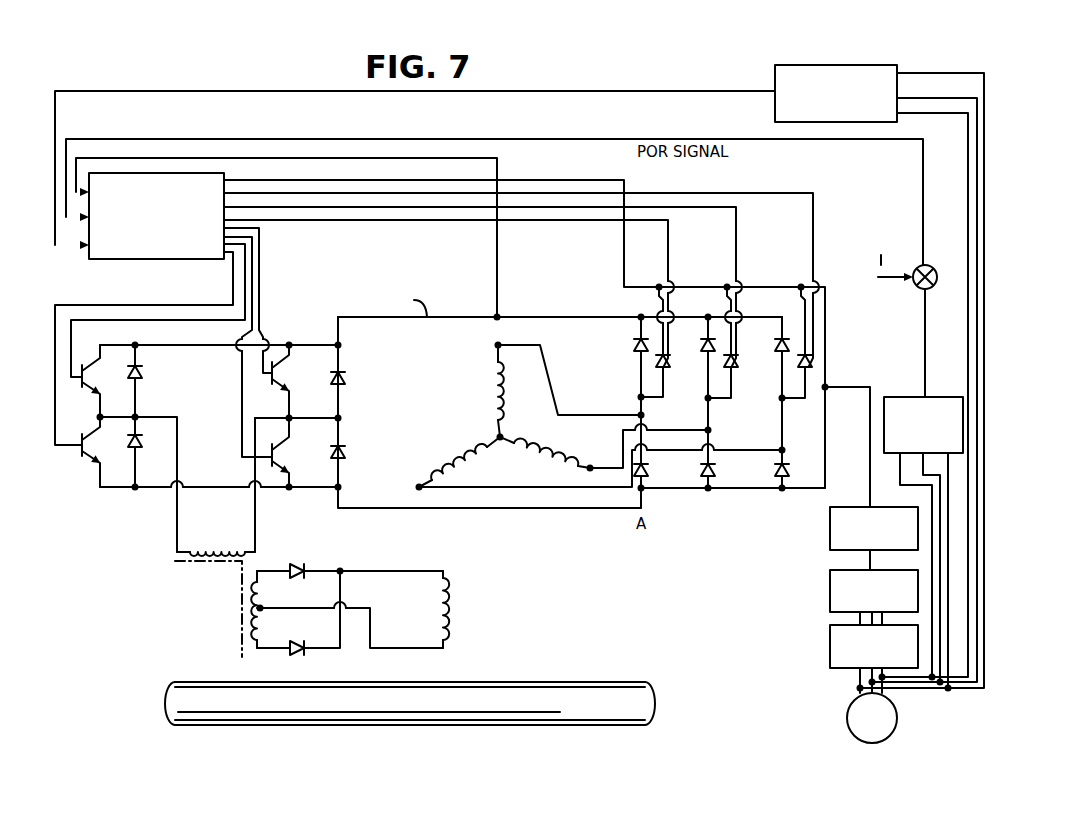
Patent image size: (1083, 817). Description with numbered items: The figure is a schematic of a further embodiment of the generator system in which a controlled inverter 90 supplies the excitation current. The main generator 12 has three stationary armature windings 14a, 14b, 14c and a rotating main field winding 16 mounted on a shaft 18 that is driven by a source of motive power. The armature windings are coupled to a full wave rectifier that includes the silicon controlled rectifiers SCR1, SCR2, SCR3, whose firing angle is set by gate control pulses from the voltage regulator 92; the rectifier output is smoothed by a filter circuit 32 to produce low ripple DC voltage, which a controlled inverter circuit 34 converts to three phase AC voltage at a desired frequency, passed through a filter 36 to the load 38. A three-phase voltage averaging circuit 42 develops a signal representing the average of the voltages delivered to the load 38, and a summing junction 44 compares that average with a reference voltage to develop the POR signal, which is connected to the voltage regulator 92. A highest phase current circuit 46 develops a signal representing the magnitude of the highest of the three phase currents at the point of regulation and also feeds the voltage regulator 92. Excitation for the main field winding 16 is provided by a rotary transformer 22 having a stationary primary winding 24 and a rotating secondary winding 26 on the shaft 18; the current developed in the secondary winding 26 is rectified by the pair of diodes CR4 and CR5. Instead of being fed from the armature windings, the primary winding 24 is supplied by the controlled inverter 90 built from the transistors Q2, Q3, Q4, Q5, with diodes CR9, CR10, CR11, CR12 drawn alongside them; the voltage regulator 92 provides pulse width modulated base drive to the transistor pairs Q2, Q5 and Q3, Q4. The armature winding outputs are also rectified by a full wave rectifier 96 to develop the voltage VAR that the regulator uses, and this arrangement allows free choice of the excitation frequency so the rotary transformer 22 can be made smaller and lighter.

The voltage regulator 92 is at (193, 262).
The controlled inverter 90 is at (231, 446).
The main generator 12 is at (560, 400).
The armature winding 14a is at (527, 444).
The armature winding 14b is at (495, 386).
The armature winding 14c is at (463, 456).
The full wave rectifier 96 is at (724, 396).
The rotary transformer 22 is at (237, 592).
The primary winding 24 is at (225, 548).
The secondary winding 26 is at (263, 590).
The main field winding 16 is at (450, 580).
The shaft 18 is at (612, 668).
The filter circuit 32 is at (829, 528).
The controlled inverter circuit 34 is at (829, 592).
The filter 36 is at (829, 648).
The load 38 is at (882, 733).
The three-phase voltage averaging circuit 42 is at (908, 397).
The summing junction 44 is at (915, 269).
The highest phase current circuit 46 is at (838, 65).
The transistor Q2 is at (90, 366).
The transistor Q3 is at (88, 465).
The transistor Q4 is at (288, 366).
The transistor Q5 is at (288, 448).
The diode CR4 is at (294, 564).
The diode CR5 is at (300, 657).
The diode CR9 is at (142, 368).
The diode CR10 is at (141, 448).
The diode CR11 is at (346, 373).
The diode CR12 is at (346, 452).
The silicon controlled rectifier SCR1 is at (812, 367).
The silicon controlled rectifier SCR2 is at (738, 366).
The silicon controlled rectifier SCR3 is at (670, 366).